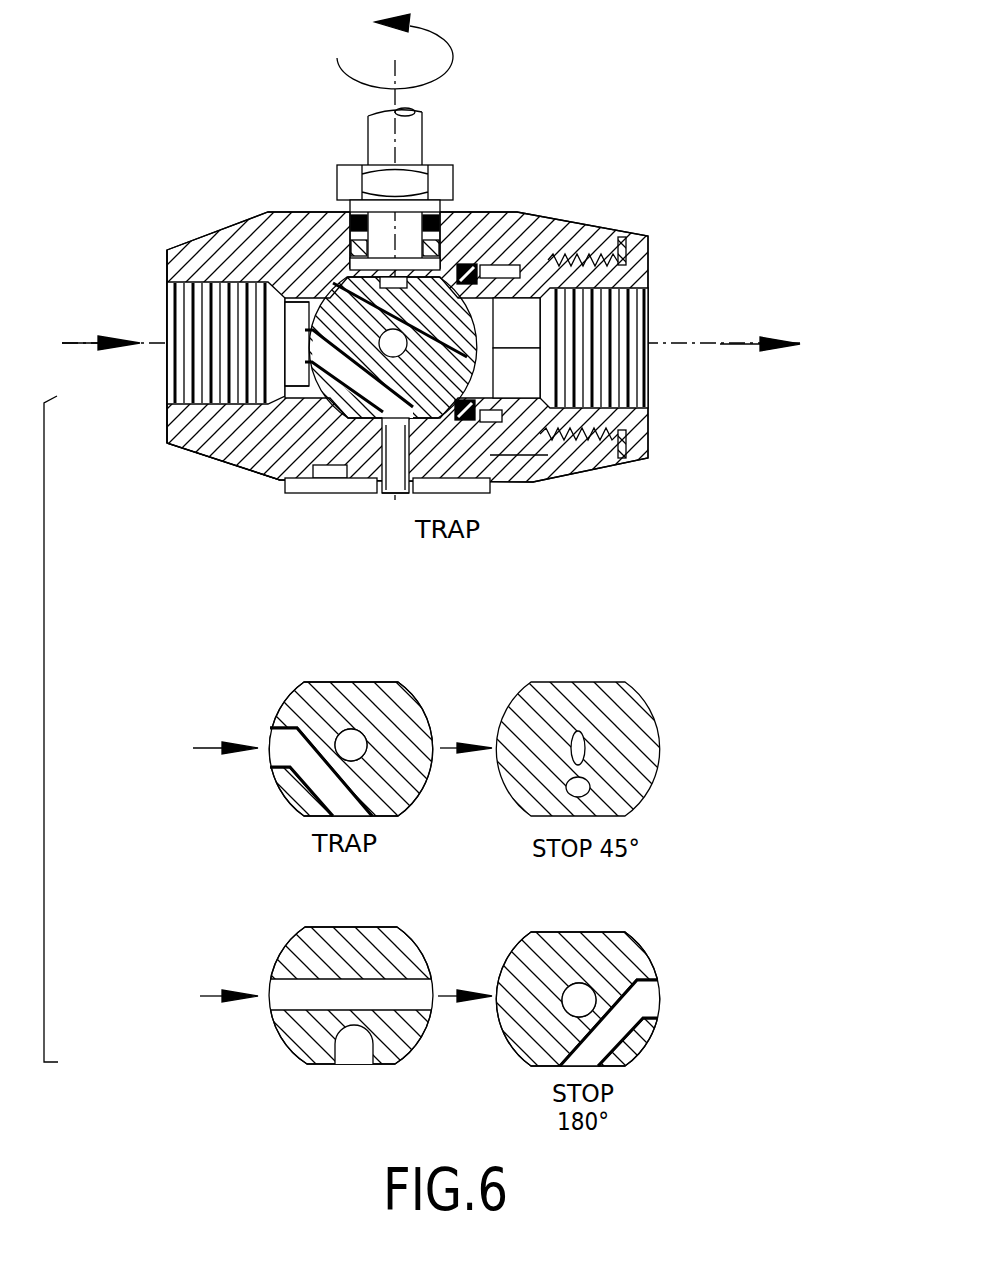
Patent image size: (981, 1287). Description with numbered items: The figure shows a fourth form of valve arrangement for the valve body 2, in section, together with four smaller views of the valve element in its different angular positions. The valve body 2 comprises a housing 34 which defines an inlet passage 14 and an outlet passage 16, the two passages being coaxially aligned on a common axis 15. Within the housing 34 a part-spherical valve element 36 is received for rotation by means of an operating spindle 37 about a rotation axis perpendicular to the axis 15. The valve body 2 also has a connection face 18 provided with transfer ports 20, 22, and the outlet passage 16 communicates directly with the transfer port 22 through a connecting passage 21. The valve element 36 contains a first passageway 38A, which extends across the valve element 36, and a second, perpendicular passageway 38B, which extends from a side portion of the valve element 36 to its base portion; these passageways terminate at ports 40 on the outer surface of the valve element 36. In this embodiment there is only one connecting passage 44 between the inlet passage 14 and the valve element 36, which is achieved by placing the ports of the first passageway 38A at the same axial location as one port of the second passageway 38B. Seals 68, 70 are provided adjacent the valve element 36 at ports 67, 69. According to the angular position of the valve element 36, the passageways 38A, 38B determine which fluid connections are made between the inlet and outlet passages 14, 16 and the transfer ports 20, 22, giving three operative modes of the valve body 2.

The valve body 2 is at (594, 192).
The inlet passage 14 is at (166, 408).
The axis 15 is at (203, 333).
The outlet passage 16 is at (648, 288).
The connection face 18 is at (492, 490).
The transfer port 20 is at (342, 494).
The connecting passage 21 is at (500, 437).
The transfer port 22 is at (407, 495).
The housing 34 is at (470, 208).
The valve element 36 is at (330, 285).
The operating spindle 37 is at (412, 147).
The first passageway 38A is at (413, 997).
The second passageway 38B is at (308, 772).
The ports 40 is at (357, 740).
The connecting passage 44 is at (268, 480).
The port 67 is at (300, 350).
The seal 68 is at (286, 487).
The port 69 is at (462, 348).
The seal 70 is at (470, 395).